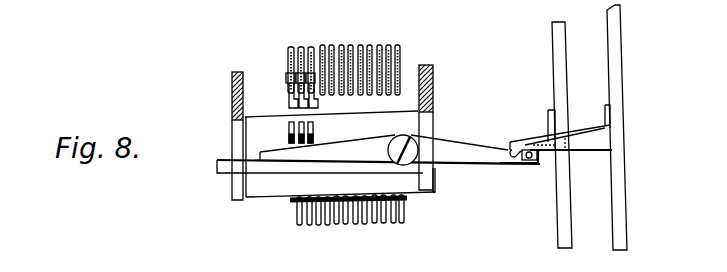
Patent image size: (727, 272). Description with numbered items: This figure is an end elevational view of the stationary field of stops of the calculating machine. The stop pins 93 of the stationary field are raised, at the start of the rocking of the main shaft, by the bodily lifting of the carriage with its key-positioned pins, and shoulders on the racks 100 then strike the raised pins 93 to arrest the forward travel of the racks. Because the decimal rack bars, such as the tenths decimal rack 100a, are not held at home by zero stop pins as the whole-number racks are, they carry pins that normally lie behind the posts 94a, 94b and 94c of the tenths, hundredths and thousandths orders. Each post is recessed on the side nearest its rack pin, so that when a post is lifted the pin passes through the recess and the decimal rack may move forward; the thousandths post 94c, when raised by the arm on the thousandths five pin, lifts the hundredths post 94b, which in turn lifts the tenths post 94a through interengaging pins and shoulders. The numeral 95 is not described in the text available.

The stop pins 93 is at (392, 209).
The tenths post 94a is at (310, 46).
The hundredths post 94b is at (299, 48).
The thousandths rack bar post 94c is at (287, 46).
The support post 95 is at (234, 100).
The racks 100 is at (392, 73).
The tenths decimal rack 100a is at (286, 86).